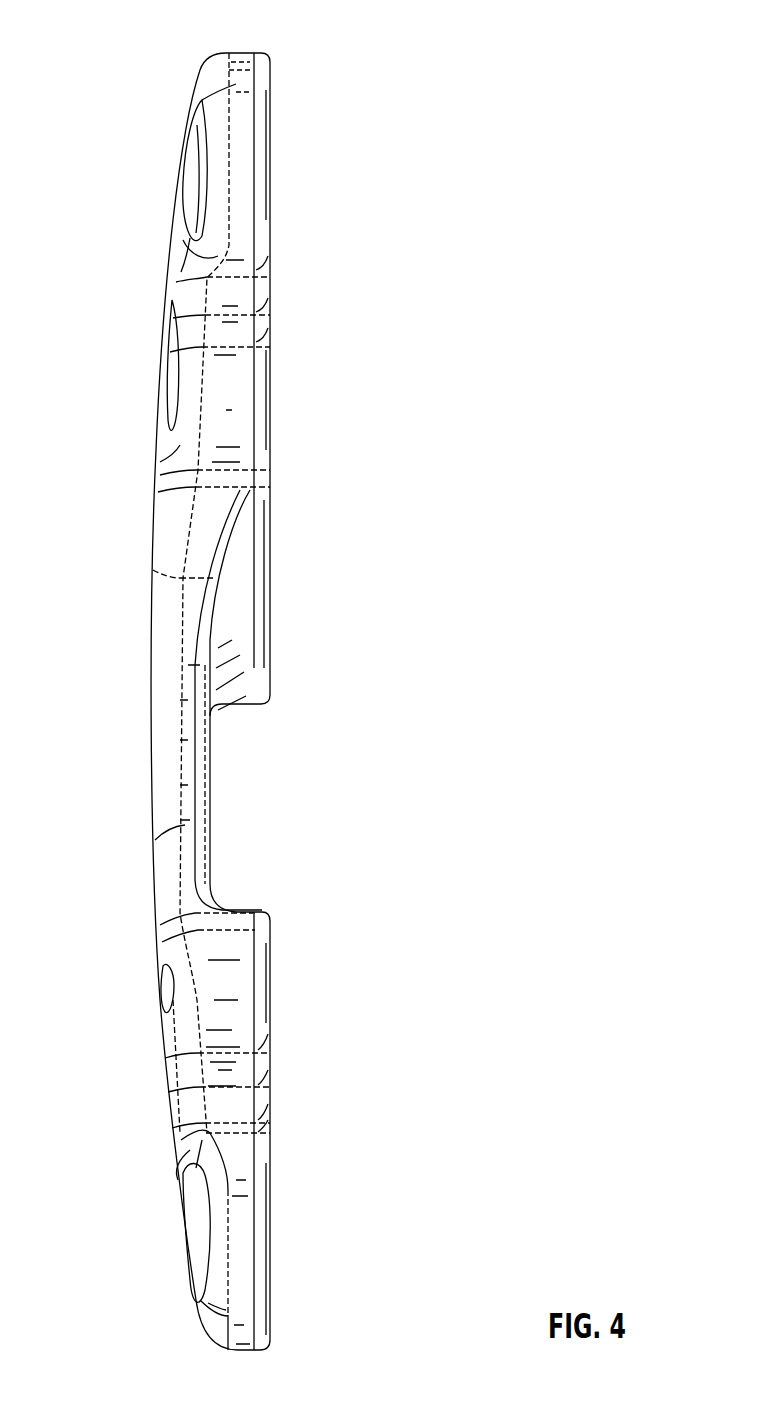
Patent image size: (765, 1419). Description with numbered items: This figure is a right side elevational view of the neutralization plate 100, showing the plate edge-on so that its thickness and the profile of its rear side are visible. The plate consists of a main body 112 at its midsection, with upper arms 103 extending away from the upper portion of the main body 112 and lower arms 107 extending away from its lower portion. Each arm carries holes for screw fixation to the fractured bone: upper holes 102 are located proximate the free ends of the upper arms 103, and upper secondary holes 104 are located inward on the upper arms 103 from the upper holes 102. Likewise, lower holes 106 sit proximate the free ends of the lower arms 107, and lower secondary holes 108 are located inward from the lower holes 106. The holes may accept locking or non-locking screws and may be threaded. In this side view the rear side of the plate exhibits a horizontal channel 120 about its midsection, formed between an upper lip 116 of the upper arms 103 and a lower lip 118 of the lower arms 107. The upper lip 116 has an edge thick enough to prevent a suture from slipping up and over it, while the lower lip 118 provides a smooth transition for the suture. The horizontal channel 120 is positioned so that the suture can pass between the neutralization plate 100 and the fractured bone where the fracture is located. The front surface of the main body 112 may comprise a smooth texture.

The neutralization plate 100 is at (437, 250).
The upper holes 102 is at (188, 154).
The upper arms 103 is at (263, 54).
The upper secondary holes 104 is at (160, 380).
The lower holes 106 is at (185, 1237).
The lower arms 107 is at (272, 1343).
The lower secondary holes 108 is at (163, 1025).
The main body 112 is at (150, 785).
The upper lip 116 is at (255, 703).
The lower lip 118 is at (240, 907).
The horizontal channel 120 is at (328, 808).